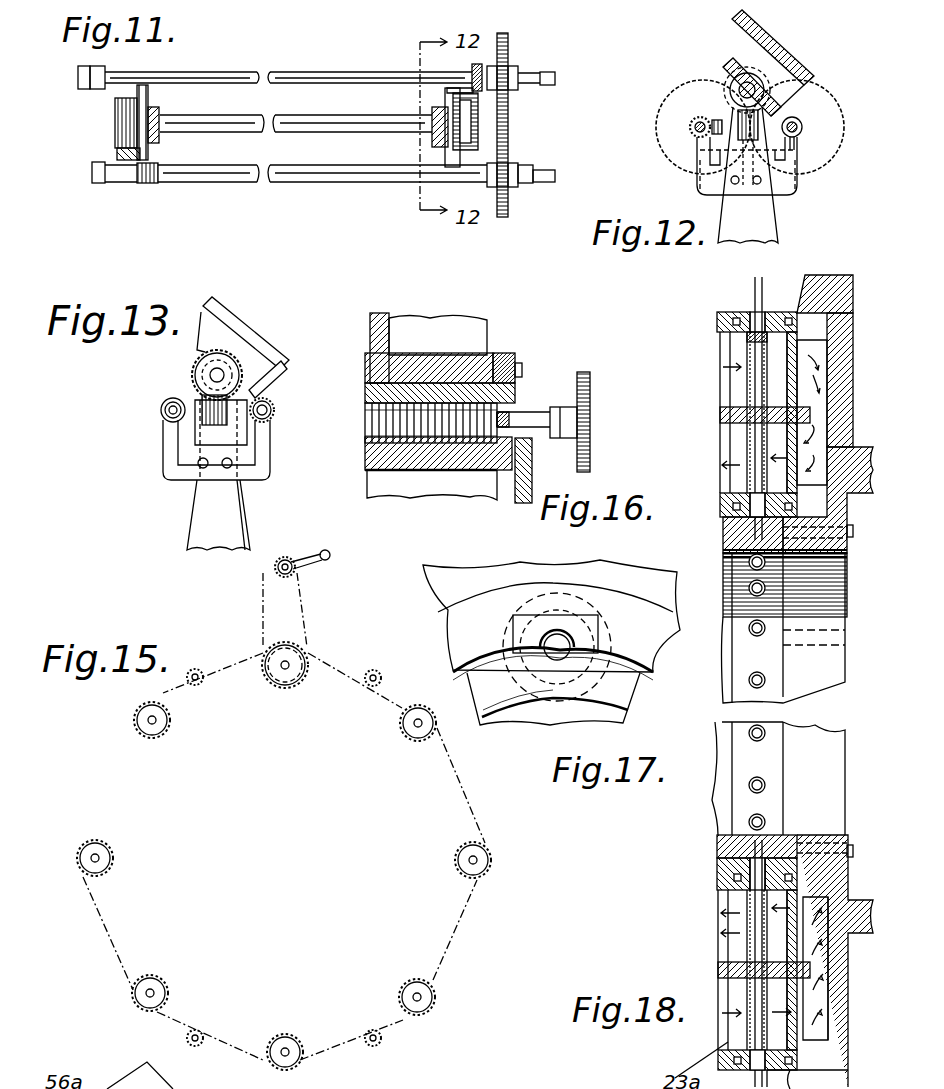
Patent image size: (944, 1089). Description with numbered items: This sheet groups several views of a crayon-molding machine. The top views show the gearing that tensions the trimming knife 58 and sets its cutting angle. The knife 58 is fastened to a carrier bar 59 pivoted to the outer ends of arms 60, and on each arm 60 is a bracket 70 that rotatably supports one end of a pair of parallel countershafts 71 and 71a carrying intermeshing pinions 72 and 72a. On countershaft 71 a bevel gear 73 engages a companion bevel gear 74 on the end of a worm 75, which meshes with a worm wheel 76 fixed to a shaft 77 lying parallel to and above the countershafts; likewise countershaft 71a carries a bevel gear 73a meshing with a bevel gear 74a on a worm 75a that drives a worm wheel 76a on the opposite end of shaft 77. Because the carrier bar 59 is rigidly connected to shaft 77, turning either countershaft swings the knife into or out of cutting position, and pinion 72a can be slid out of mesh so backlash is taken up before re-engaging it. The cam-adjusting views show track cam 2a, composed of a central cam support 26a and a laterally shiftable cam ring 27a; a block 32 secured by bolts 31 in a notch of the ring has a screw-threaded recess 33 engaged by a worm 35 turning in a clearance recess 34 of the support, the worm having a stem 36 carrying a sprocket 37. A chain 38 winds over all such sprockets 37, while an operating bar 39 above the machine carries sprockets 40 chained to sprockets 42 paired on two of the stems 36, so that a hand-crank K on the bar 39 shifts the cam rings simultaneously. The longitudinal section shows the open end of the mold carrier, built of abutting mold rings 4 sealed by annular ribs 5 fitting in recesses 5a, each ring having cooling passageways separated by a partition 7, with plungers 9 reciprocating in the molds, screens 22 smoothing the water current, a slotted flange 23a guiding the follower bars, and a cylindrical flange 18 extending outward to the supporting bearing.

In FIG. 11, the countershaft 71 is at (337, 66).
In FIG. 13, the countershaft 71 is at (163, 413).
In FIG. 11, the countershaft 71a is at (290, 183).
In FIG. 13, the countershaft 71a is at (265, 406).
In FIG. 11, the pinion 72 is at (508, 35).
In FIG. 11, the pinion 72a is at (500, 217).
In FIG. 11, the bevel gear 73 is at (482, 66).
In FIG. 11, the bevel gear 73a is at (142, 185).
In FIG. 11, the bevel gear 74 is at (447, 90).
In FIG. 11, the bevel gear 74a is at (128, 160).
In FIG. 13, the worm 75 is at (202, 397).
In FIG. 11, the worm 75a is at (125, 103).
In FIG. 11, the worm wheel 76 is at (468, 112).
In FIG. 13, the worm wheel 76 is at (197, 362).
In FIG. 11, the worm wheel 76a is at (148, 98).
In FIG. 11, the shaft 77 is at (240, 120).
In FIG. 13, the shaft 77 is at (222, 373).
In FIG. 11, the bracket 70 is at (447, 155).
In FIG. 12, the bracket 70 is at (697, 185).
In FIG. 13, the bracket 70 is at (183, 452).
In FIG. 12, the trimming knife 58 is at (760, 22).
In FIG. 13, the trimming knife 58 is at (227, 308).
In FIG. 12, the carrier bar 59 is at (727, 62).
In FIG. 13, the carrier bar 59 is at (207, 330).
In FIG. 12, the arm 60 is at (765, 210).
In FIG. 13, the arm 60 is at (205, 517).
In FIG. 16, the track cam 2a is at (370, 332).
In FIG. 17, the track cam 2a is at (425, 628).
In FIG. 16, the cam ring 27a is at (455, 333).
In FIG. 17, the cam ring 27a is at (647, 643).
In FIG. 16, the cam support 26a is at (443, 487).
In FIG. 17, the cam support 26a is at (620, 695).
In FIG. 16, the bolt 31 is at (518, 367).
In FIG. 16, the block 32 is at (515, 388).
In FIG. 17, the block 32 is at (587, 637).
In FIG. 16, the screw-threaded recess 33 is at (387, 406).
In FIG. 16, the clearance recess 34 is at (415, 443).
In FIG. 16, the worm 35 is at (388, 443).
In FIG. 16, the stem 36 is at (535, 417).
In FIG. 16, the sprocket 37 is at (588, 413).
In FIG. 15, the sprocket 37 is at (83, 860).
In FIG. 15, the chain 38 is at (105, 927).
In FIG. 15, the operating bar 39 is at (277, 567).
In FIG. 15, the sprocket 40 is at (291, 556).
In FIG. 15, the hand-crank K is at (305, 565).
In FIG. 15, the sprocket 42 is at (287, 693).
In FIG. 18, the plunger 9 is at (753, 292).
In FIG. 18, the flange 23a is at (812, 277).
In FIG. 18, the screen 22 is at (835, 1020).
In FIG. 18, the mold ring 4 is at (713, 812).
In FIG. 18, the annular rib 5 is at (737, 880).
In FIG. 18, the annular recess 5a is at (750, 873).
In FIG. 18, the partition 7 is at (723, 970).
In FIG. 18, the cylindrical flange 18 is at (848, 488).